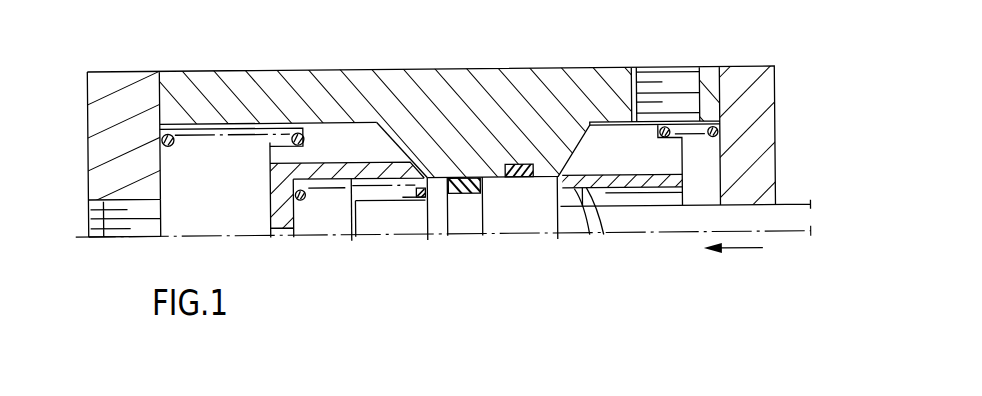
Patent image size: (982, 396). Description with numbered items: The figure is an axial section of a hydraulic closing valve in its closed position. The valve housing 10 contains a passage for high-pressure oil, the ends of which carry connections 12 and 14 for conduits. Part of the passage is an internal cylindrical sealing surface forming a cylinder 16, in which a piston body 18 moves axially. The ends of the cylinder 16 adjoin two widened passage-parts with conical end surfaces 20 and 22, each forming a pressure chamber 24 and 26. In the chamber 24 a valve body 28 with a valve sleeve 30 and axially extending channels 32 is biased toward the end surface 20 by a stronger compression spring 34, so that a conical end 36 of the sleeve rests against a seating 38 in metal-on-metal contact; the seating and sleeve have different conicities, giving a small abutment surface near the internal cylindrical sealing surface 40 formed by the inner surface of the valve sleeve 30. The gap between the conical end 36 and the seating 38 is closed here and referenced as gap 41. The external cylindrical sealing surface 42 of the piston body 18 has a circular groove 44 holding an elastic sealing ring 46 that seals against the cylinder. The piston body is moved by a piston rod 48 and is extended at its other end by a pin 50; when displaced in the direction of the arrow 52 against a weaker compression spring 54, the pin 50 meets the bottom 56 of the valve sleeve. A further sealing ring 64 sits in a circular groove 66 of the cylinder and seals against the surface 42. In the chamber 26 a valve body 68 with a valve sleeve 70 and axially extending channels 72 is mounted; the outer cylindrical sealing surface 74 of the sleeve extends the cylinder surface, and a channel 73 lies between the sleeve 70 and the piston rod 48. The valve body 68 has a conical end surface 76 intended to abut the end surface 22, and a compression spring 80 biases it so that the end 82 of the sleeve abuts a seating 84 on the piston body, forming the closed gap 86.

The valve housing 10 is at (409, 68).
The connection 12 is at (112, 240).
The connection 14 is at (668, 77).
The cylinder 16 is at (478, 175).
The piston body 18 is at (491, 233).
The conical end surface 20 is at (402, 135).
The conical end surface 22 is at (587, 130).
The pressure chamber 24 is at (179, 203).
The pressure chamber 26 is at (623, 141).
The valve body 28 is at (263, 210).
The valve sleeve 30 is at (290, 170).
The axially extending channels 32 is at (283, 152).
The stronger compression spring 34 is at (188, 137).
The conical end 36 is at (412, 181).
The seating 38 is at (412, 154).
The internal cylindrical sealing surface 40 is at (330, 240).
The closed gap 41 is at (352, 162).
The external cylindrical sealing surface 42 is at (552, 181).
The circular groove 44 is at (441, 236).
The sealing ring 46 is at (481, 194).
The piston rod 48 is at (781, 208).
The pin 50 is at (378, 236).
The arrow 52 is at (736, 252).
The weaker compression spring 54 is at (332, 184).
The bottom 56 is at (301, 233).
The further sealing ring 64 is at (509, 165).
The circular groove 66 is at (533, 169).
The valve body 68 is at (684, 151).
The valve sleeve 70 is at (600, 222).
The axially extending channels 72 is at (570, 186).
The channel 73 is at (661, 230).
The outer cylindrical sealing surface 74 is at (653, 197).
The conical end surface 76 is at (632, 150).
The compression spring 80 is at (684, 134).
The end 82 is at (593, 205).
The seating 84 is at (581, 216).
The gap 86 is at (566, 191).